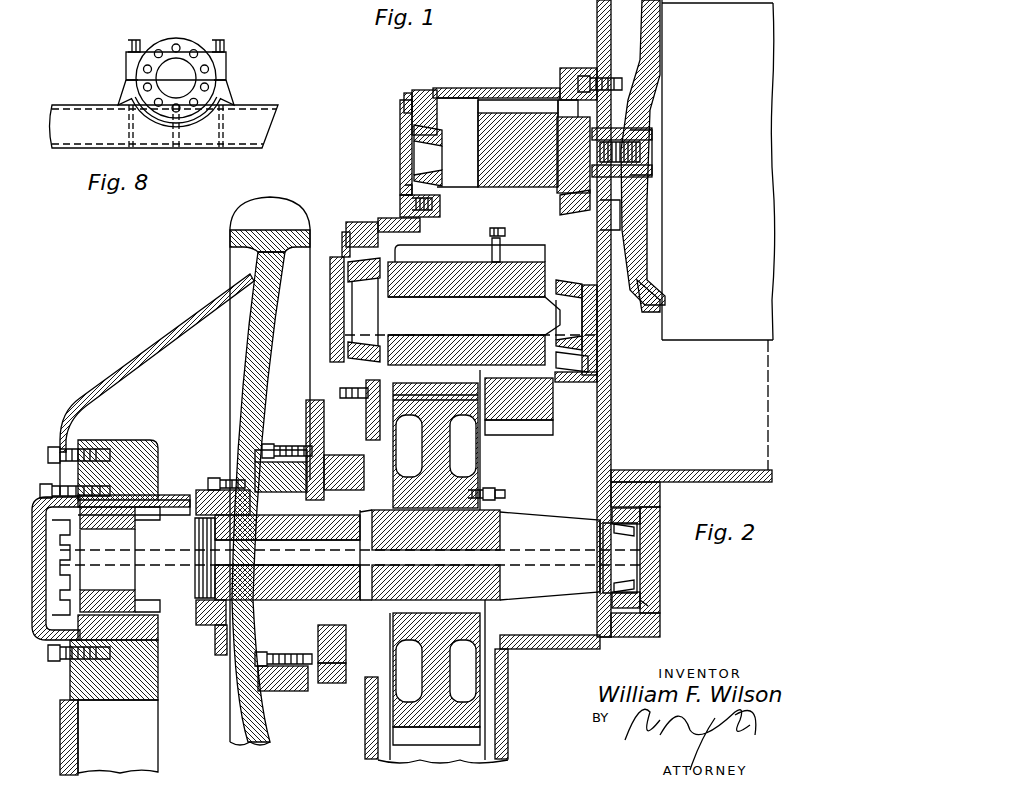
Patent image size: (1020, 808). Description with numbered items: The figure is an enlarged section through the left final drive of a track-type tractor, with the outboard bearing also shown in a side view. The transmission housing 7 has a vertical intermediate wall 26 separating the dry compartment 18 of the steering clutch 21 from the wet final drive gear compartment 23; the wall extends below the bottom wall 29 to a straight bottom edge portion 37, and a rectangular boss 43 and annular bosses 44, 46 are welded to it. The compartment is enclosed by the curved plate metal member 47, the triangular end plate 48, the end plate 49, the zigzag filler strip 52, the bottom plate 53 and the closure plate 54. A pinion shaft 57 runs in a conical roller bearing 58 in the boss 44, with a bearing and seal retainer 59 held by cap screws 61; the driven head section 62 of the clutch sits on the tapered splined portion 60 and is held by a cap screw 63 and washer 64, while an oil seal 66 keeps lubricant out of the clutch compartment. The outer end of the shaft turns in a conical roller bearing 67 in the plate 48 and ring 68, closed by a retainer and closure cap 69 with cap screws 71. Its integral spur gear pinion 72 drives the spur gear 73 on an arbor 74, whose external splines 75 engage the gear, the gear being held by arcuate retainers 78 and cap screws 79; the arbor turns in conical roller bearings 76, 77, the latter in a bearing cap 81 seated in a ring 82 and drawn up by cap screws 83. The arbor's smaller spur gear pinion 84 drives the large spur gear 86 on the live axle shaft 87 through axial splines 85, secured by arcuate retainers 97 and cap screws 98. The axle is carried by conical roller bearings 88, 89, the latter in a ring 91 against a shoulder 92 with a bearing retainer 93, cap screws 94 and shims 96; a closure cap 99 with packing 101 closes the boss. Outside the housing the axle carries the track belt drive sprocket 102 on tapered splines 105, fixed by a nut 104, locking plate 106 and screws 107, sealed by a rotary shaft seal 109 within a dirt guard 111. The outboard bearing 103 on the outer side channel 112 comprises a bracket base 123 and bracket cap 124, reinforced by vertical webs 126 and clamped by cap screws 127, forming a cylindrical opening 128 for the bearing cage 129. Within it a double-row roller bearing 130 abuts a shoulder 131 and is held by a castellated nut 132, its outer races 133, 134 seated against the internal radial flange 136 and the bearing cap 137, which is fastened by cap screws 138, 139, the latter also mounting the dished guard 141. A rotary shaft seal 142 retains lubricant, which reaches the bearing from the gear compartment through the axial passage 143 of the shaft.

In FIG. 2, the transmission housing 7 is at (678, 398).
In FIG. 2, the dry compartment 18 is at (768, 386).
In FIG. 2, the steering clutch 21 is at (697, 340).
In FIG. 2, the final drive gear compartment 23 is at (468, 98).
In FIG. 2, the intermediate wall 26 is at (597, 20).
In FIG. 2, the bottom wall 29 is at (722, 470).
In FIG. 2, the bottom edge portion 37 is at (612, 638).
In FIG. 2, the rectangular boss 43 is at (637, 626).
In FIG. 2, the annular boss 44 is at (578, 70).
In FIG. 2, the annular boss 46 is at (581, 375).
In FIG. 2, the curved plate metal member 47 is at (509, 88).
In FIG. 2, the triangular end plate 48 is at (426, 91).
In FIG. 2, the end plate 49 is at (365, 727).
In FIG. 2, the filler strip 52 is at (392, 212).
In FIG. 2, the bottom plate 53 is at (556, 649).
In FIG. 2, the closure plate 54 is at (509, 717).
In FIG. 2, the pinion shaft 57 is at (414, 138).
In FIG. 2, the conical roller bearing 58 is at (576, 146).
In FIG. 2, the bearing and seal retainer 59 is at (618, 238).
In FIG. 2, the tapered splined portion 60 is at (640, 122).
In FIG. 2, the cap screws 61 is at (606, 77).
In FIG. 2, the driven head section 62 is at (641, 258).
In FIG. 2, the cap screw 63 is at (652, 152).
In FIG. 2, the washer 64 is at (650, 132).
In FIG. 2, the oil seal 66 is at (590, 186).
In FIG. 2, the conical roller bearing 67 is at (437, 187).
In FIG. 2, the ring 68 is at (409, 93).
In FIG. 2, the retainer and closure cap 69 is at (400, 113).
In FIG. 2, the cap screws 71 is at (404, 184).
In FIG. 2, the spur gear pinion 72 is at (526, 108).
In FIG. 2, the spur gear 73 is at (536, 430).
In FIG. 2, the arbor 74 is at (463, 282).
In FIG. 2, the external splines 75 is at (562, 382).
In FIG. 2, the conical roller bearing 76 is at (568, 332).
In FIG. 2, the conical roller bearing 77 is at (360, 282).
In FIG. 2, the arcuate retainers 78 is at (492, 250).
In FIG. 2, the cap screws 79 is at (489, 230).
In FIG. 2, the bearing cap 81 is at (333, 258).
In FIG. 2, the ring 82 is at (352, 224).
In FIG. 2, the cap screws 83 is at (342, 398).
In FIG. 2, the spur gear pinion 84 is at (448, 252).
In FIG. 2, the axial splines 85 is at (413, 489).
In FIG. 2, the spur gear 86 is at (481, 451).
In FIG. 2, the live axle shaft 87 is at (546, 518).
In FIG. 2, the conical roller bearing 88 is at (608, 600).
In FIG. 2, the conical roller bearing 89 is at (342, 641).
In FIG. 2, the ring 91 is at (335, 684).
In FIG. 2, the shoulder 92 is at (366, 534).
In FIG. 2, the bearing retainer 93 is at (305, 674).
In FIG. 2, the cap screws 94 is at (297, 444).
In FIG. 2, the shims 96 is at (329, 447).
In FIG. 2, the arcuate retainers 97 is at (490, 486).
In FIG. 2, the cap screws 98 is at (500, 491).
In FIG. 2, the closure cap 99 is at (660, 566).
In FIG. 2, the packing 101 is at (660, 606).
In FIG. 2, the track belt drive sprocket 102 is at (232, 240).
In FIG. 2, the outboard bearing 103 is at (92, 418).
In FIG. 2, the nut 104 is at (205, 630).
In FIG. 2, the tapered splines 105 is at (228, 552).
In FIG. 2, the locking plate 106 is at (218, 648).
In FIG. 2, the screws 107 is at (210, 479).
In FIG. 2, the rotary shaft seal 109 is at (276, 654).
In FIG. 2, the dirt guard 111 is at (283, 462).
In FIG. 8, the outer side channel 112 is at (66, 112).
In FIG. 2, the outer side channel 112 is at (60, 732).
In FIG. 8, the bracket base 123 is at (230, 98).
In FIG. 2, the bracket base 123 is at (158, 666).
In FIG. 8, the bracket cap 124 is at (228, 64).
In FIG. 2, the bracket cap 124 is at (138, 443).
In FIG. 8, the vertical webs 126 is at (220, 136).
In FIG. 2, the vertical webs 126 is at (160, 738).
In FIG. 8, the cap screws 127 is at (182, 37).
In FIG. 2, the cylindrical opening 128 is at (160, 492).
In FIG. 2, the bearing cage 129 is at (150, 632).
In FIG. 2, the double-row roller bearing 130 is at (114, 522).
In FIG. 2, the shoulder 131 is at (140, 553).
In FIG. 2, the castellated nut 132 is at (76, 552).
In FIG. 2, the outer race 133 is at (136, 596).
In FIG. 2, the outer race 134 is at (100, 596).
In FIG. 2, the internal radial flange 136 is at (142, 522).
In FIG. 2, the bearing cap 137 is at (48, 613).
In FIG. 8, the cap screws 138 is at (178, 50).
In FIG. 2, the cap screws 138 is at (42, 486).
In FIG. 8, the cap screws 139 is at (156, 48).
In FIG. 2, the cap screws 139 is at (52, 450).
In FIG. 2, the dished guard 141 is at (160, 348).
In FIG. 2, the rotary shaft seal 142 is at (183, 528).
In FIG. 2, the axial passage 143 is at (496, 555).